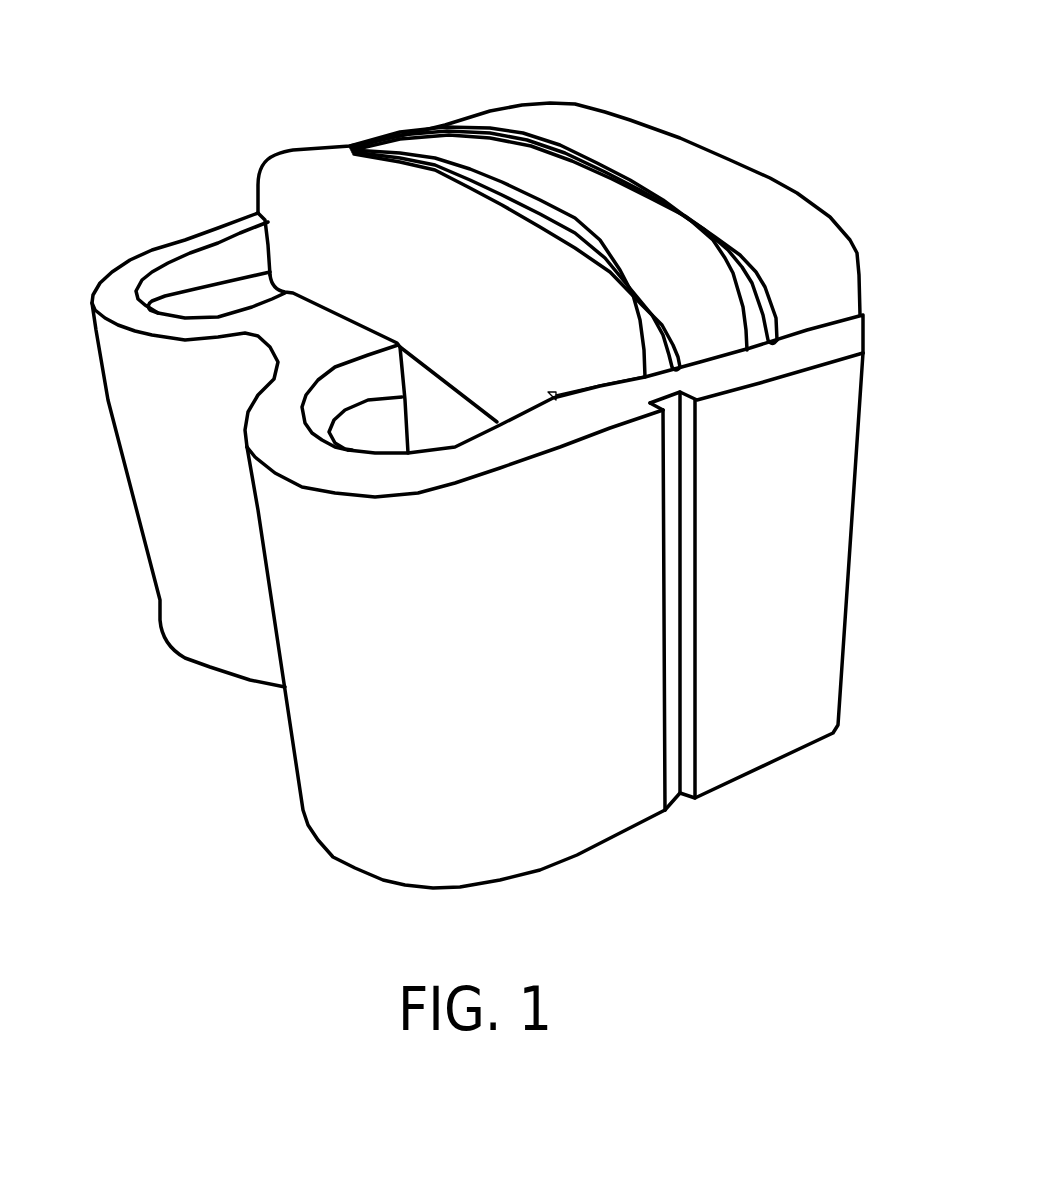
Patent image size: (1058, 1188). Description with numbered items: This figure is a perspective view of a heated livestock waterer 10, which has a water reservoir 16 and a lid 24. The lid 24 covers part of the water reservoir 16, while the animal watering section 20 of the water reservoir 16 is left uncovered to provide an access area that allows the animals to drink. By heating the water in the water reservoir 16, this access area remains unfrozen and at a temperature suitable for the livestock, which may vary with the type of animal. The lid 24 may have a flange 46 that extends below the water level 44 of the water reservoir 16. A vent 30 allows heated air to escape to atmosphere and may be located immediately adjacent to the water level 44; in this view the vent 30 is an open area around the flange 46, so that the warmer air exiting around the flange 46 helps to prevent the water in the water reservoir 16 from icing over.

The heated livestock waterer 10 is at (193, 95).
The water reservoir 16 is at (423, 422).
The animal watering section 20 is at (193, 302).
The lid 24 is at (743, 190).
The vent 30 is at (677, 367).
The water level 44 is at (197, 287).
The flange 46 is at (347, 243).